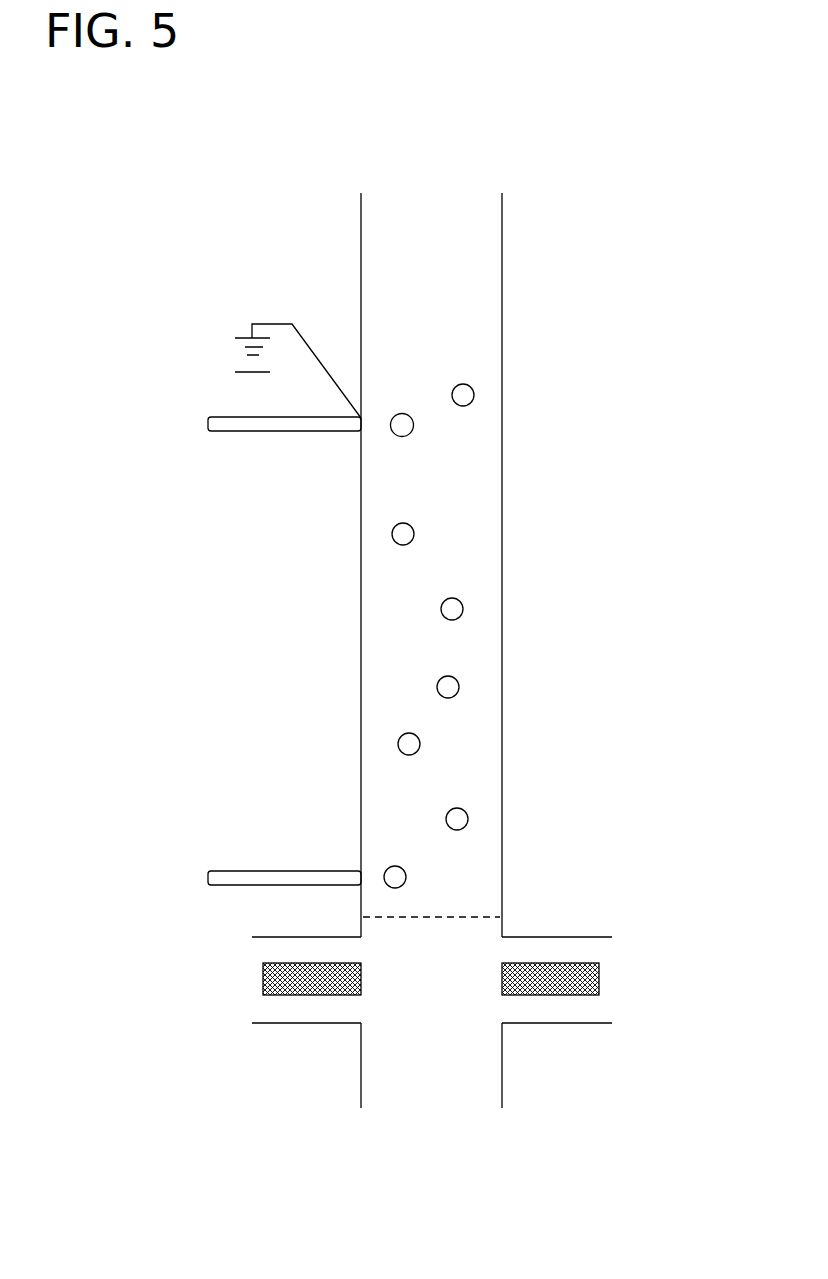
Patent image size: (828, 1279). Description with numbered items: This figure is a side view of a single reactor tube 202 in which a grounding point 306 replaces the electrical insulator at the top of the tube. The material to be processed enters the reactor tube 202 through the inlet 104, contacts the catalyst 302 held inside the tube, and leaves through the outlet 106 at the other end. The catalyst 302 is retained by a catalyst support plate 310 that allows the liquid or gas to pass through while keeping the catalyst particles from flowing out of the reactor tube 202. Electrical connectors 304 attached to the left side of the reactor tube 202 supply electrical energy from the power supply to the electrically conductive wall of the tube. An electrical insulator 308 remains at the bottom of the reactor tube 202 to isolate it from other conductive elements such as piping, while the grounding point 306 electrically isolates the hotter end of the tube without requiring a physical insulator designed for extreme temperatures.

The inlet 104 is at (457, 235).
The outlet 106 is at (440, 1068).
The reactor tube 202 is at (502, 590).
The catalyst 302 is at (432, 528).
The electrical connectors 304 is at (208, 425).
The grounding point 306 is at (277, 323).
The electrical insulators 308 is at (599, 980).
The catalyst support plate 310 is at (467, 915).